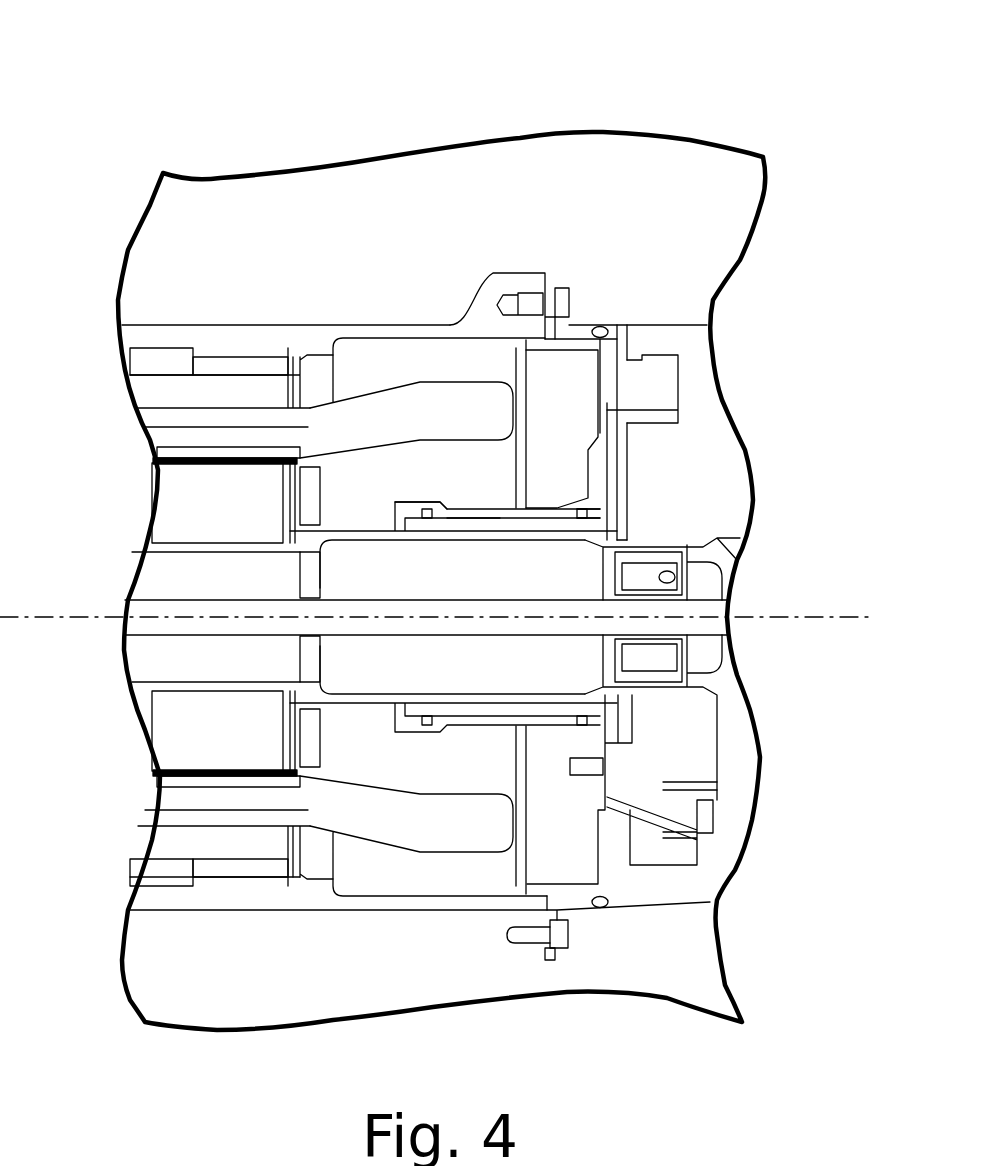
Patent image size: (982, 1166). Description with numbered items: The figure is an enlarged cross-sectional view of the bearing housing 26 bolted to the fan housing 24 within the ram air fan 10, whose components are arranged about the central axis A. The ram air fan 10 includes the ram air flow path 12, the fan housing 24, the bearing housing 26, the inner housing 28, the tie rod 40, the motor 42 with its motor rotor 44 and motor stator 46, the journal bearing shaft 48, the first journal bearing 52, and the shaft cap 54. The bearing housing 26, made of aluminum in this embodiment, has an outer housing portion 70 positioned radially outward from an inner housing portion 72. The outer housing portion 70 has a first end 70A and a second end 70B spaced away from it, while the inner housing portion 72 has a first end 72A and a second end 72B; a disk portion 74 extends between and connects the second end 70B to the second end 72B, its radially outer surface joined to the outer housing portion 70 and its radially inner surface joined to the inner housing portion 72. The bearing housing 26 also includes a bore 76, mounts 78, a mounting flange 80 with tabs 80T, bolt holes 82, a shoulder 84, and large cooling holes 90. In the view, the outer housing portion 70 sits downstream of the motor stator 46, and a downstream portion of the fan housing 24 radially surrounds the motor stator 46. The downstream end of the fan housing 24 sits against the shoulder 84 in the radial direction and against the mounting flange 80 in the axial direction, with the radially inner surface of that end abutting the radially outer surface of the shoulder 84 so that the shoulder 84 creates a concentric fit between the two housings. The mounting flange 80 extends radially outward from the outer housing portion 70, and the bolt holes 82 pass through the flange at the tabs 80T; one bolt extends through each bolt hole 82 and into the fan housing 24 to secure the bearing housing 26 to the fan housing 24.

The ram air fan 10 is at (224, 116).
The ram air flow path 12 is at (348, 260).
The fan housing 24 is at (215, 345).
The bearing housing 26 is at (573, 340).
The inner housing 28 is at (700, 905).
The tie rod 40 is at (702, 608).
The motor 42 is at (222, 893).
The motor rotor 44 is at (188, 718).
The motor stator 46 is at (217, 868).
The journal bearing shaft 48 is at (668, 540).
The first journal bearing 52 is at (717, 803).
The shaft cap 54 is at (720, 677).
The outer housing portion 70 is at (583, 342).
The first end 70A is at (526, 342).
The second end 70B is at (617, 343).
The inner housing portion 72 is at (460, 515).
The first end 72A is at (390, 520).
The second end 72B is at (617, 508).
The disk portion 74 is at (535, 710).
The bore 76 is at (470, 518).
The mounts 78 is at (657, 385).
The mounting flange 80 is at (550, 287).
The tabs 80T is at (550, 282).
The bolt holes 82 is at (550, 295).
The shoulder 84 is at (538, 343).
The large cooling holes 90 is at (598, 463).
The axis A is at (808, 620).